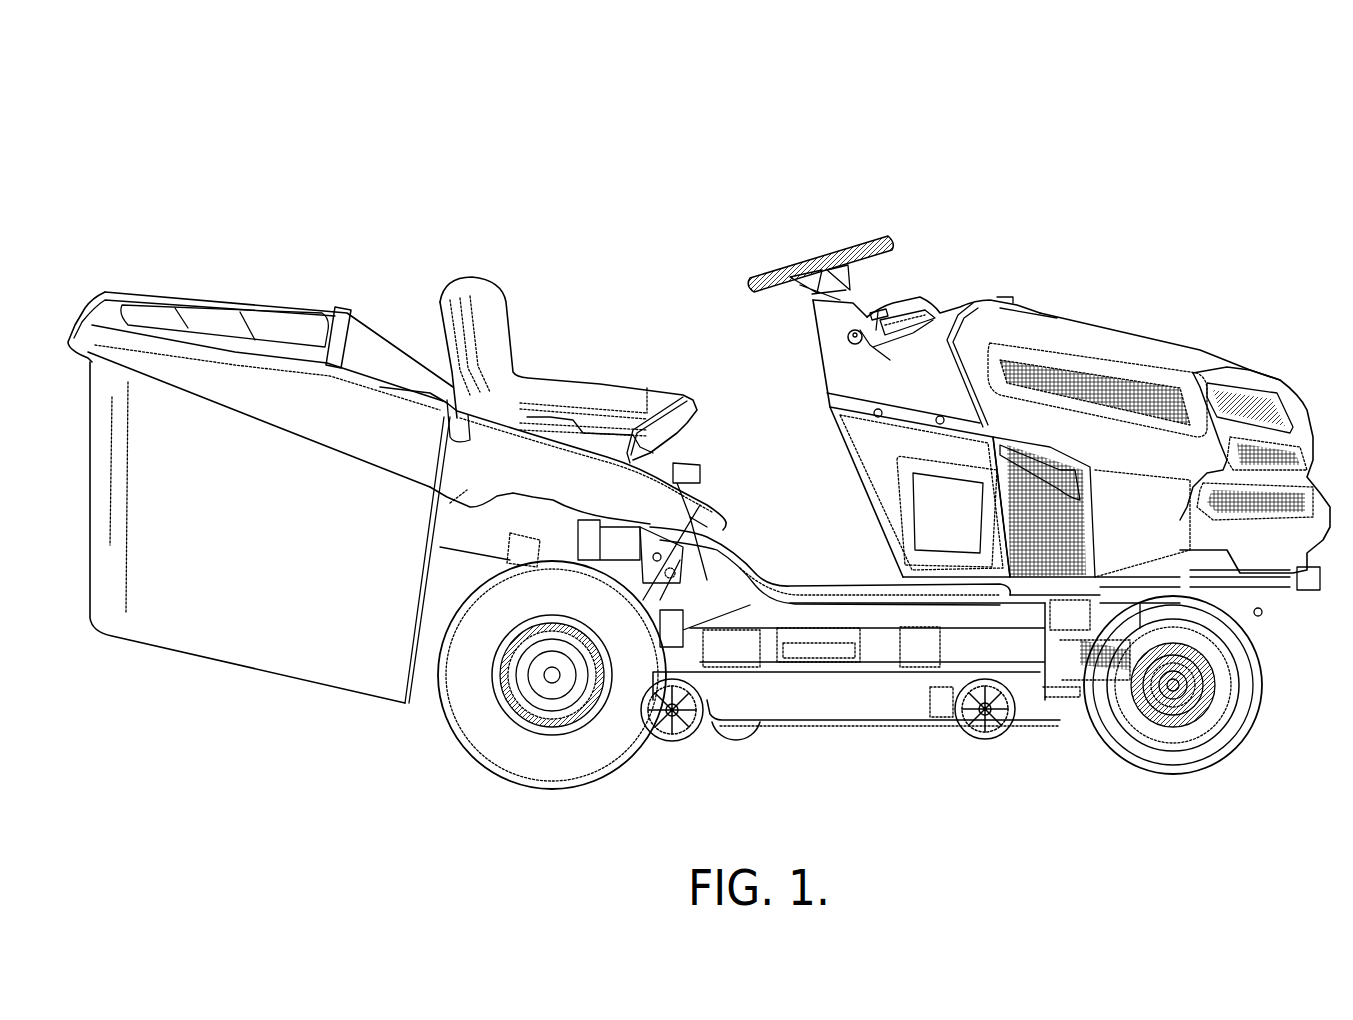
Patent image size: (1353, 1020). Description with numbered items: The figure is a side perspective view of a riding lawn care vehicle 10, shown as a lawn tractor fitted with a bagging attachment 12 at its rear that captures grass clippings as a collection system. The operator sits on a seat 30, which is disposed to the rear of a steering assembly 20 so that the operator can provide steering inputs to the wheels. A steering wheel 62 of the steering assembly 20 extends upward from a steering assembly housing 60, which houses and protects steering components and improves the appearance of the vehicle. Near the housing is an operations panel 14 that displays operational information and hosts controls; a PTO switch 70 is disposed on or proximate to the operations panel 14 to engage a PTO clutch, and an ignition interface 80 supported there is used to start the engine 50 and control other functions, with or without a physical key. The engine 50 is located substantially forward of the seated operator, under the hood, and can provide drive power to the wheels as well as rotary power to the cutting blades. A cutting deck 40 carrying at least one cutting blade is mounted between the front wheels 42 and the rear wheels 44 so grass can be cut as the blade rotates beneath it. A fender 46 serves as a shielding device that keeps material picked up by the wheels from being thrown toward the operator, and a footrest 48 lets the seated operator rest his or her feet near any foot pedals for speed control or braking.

The riding lawn care vehicle 10 is at (1127, 172).
The bagging attachment 12 is at (187, 275).
The operations panel 14 is at (935, 314).
The steering assembly 20 is at (830, 235).
The seat 30 is at (483, 296).
The cutting deck 40 is at (858, 708).
The front wheels 42 is at (1222, 745).
The rear wheels 44 is at (597, 760).
The fender 46 is at (445, 412).
The footrest 48 is at (873, 597).
The engine 50 is at (1203, 340).
The steering assembly housing 60 is at (800, 360).
The steering wheel 62 is at (760, 280).
The PTO switch 70 is at (878, 305).
The ignition interface 80 is at (838, 330).